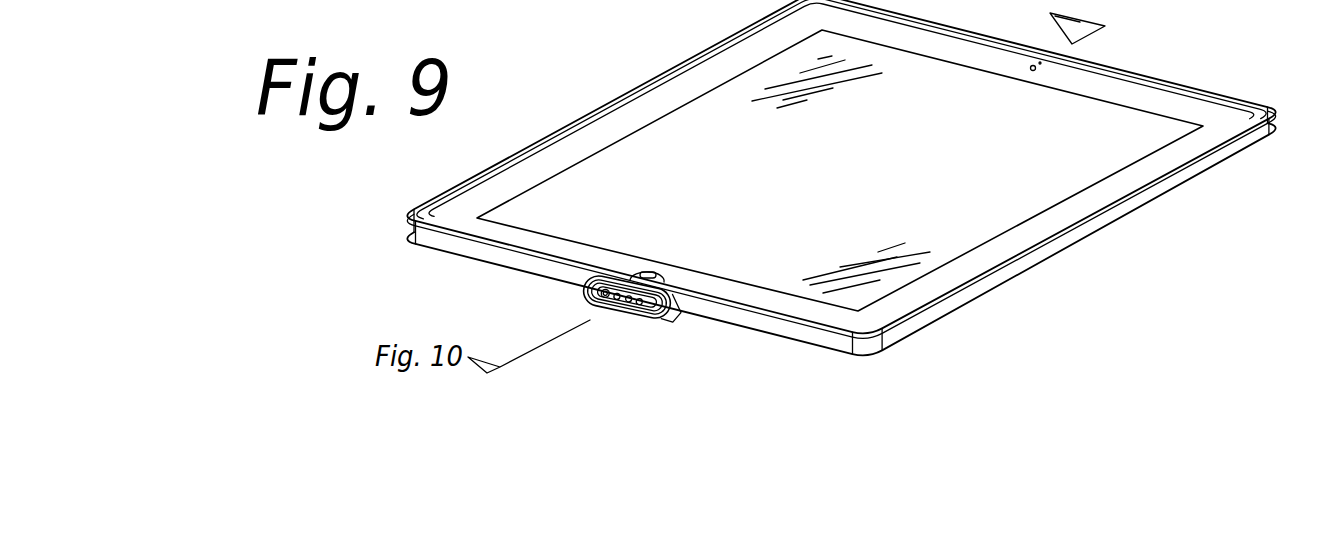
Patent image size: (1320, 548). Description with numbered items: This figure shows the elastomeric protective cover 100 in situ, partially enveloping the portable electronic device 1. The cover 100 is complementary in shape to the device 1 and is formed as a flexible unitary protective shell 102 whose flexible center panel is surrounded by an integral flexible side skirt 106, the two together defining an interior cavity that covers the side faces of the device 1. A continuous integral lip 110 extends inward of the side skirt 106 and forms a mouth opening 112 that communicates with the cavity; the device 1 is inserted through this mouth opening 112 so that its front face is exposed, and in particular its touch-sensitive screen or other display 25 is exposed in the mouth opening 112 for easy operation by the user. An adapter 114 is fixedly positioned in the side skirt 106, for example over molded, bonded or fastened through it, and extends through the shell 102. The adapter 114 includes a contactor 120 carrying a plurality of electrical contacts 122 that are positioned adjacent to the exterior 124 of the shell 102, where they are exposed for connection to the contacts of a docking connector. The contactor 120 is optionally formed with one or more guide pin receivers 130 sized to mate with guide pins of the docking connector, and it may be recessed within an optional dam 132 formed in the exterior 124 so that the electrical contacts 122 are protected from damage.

The portable electronic device 1 is at (1117, 95).
The display 25 is at (870, 167).
The protective cover 100 is at (647, 82).
The unitary protective shell 102 is at (1188, 172).
The side skirt 106 is at (476, 264).
The lip 110 is at (480, 243).
The mouth opening 112 is at (1226, 130).
The adapter 114 is at (785, 38).
The contactor 120 is at (605, 315).
The electrical contacts 122 is at (628, 324).
The exterior 124 is at (784, 340).
The guide pin receivers 130 is at (587, 295).
The dam 132 is at (668, 315).